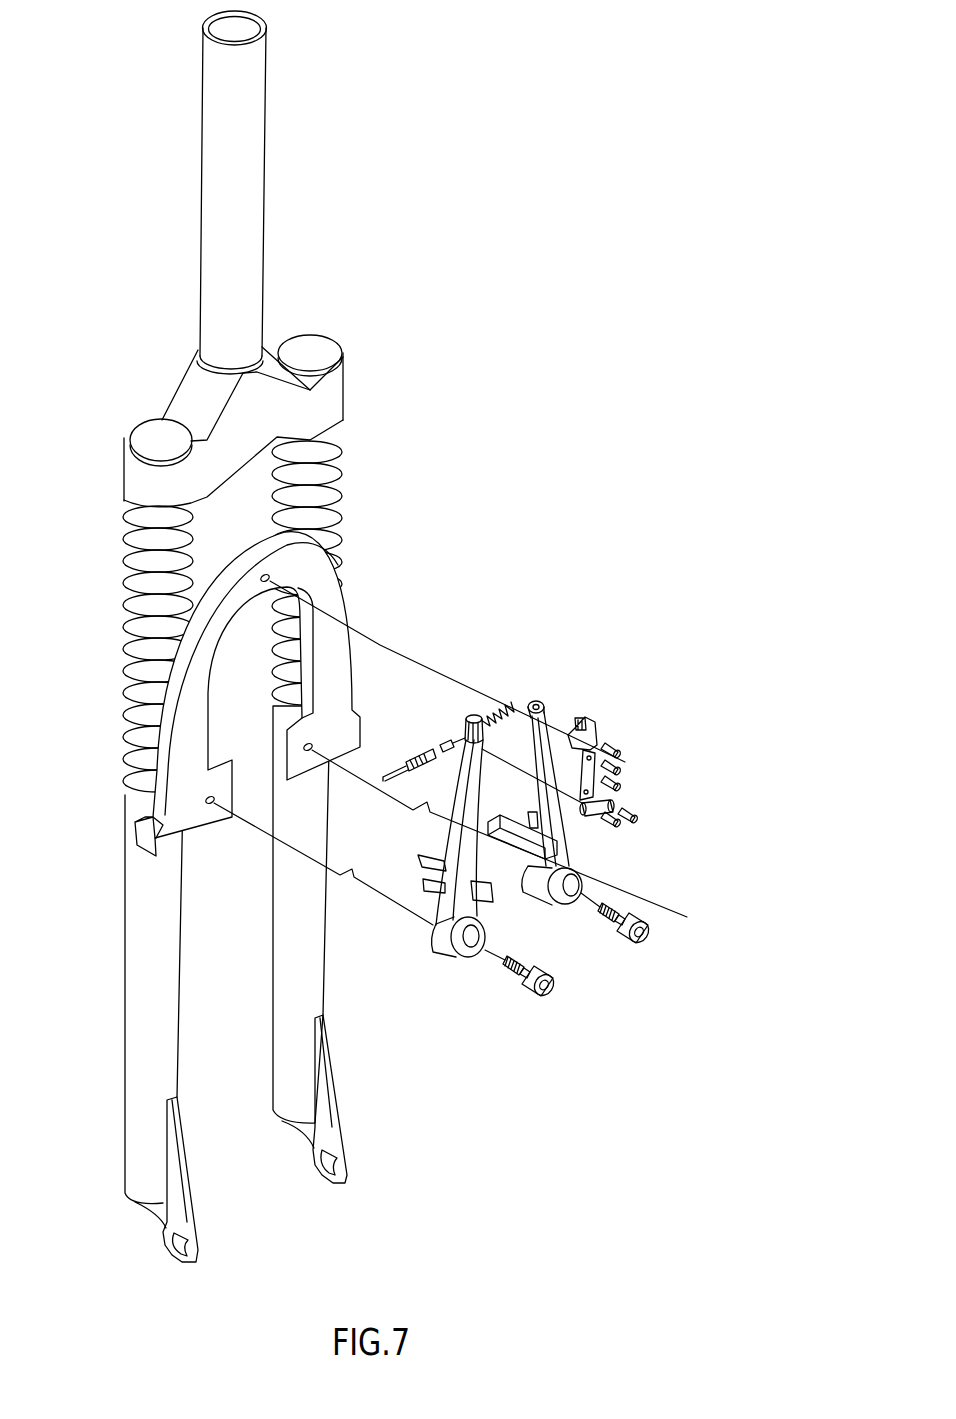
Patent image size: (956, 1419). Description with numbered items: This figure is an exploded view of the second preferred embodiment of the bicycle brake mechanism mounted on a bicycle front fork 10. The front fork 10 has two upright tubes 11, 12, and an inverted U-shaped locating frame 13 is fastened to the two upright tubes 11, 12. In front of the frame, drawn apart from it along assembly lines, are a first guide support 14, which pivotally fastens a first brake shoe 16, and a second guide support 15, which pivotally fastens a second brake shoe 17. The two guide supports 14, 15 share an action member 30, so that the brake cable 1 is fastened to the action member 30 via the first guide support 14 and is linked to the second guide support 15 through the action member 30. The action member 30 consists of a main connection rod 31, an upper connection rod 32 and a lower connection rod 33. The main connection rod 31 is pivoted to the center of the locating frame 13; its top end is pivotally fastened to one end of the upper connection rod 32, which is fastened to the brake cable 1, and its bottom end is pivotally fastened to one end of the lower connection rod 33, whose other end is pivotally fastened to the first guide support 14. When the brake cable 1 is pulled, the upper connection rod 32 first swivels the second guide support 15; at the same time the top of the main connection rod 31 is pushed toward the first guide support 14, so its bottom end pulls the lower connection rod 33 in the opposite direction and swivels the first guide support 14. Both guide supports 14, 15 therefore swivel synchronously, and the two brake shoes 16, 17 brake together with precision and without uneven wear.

The bicycle front fork 10 is at (291, 636).
The upright tube 11 is at (125, 1127).
The upright tube 12 is at (273, 1043).
The inverted U-shaped locating frame 13 is at (178, 757).
The first guide support 14 is at (452, 833).
The second guide support 15 is at (533, 701).
The first brake shoe 16 is at (485, 900).
The second brake shoe 17 is at (612, 951).
The action member 30 is at (552, 820).
The main connection rod 31 is at (479, 744).
The upper connection rod 32 is at (588, 730).
The lower connection rod 33 is at (585, 812).
The brake cable 1 is at (417, 752).